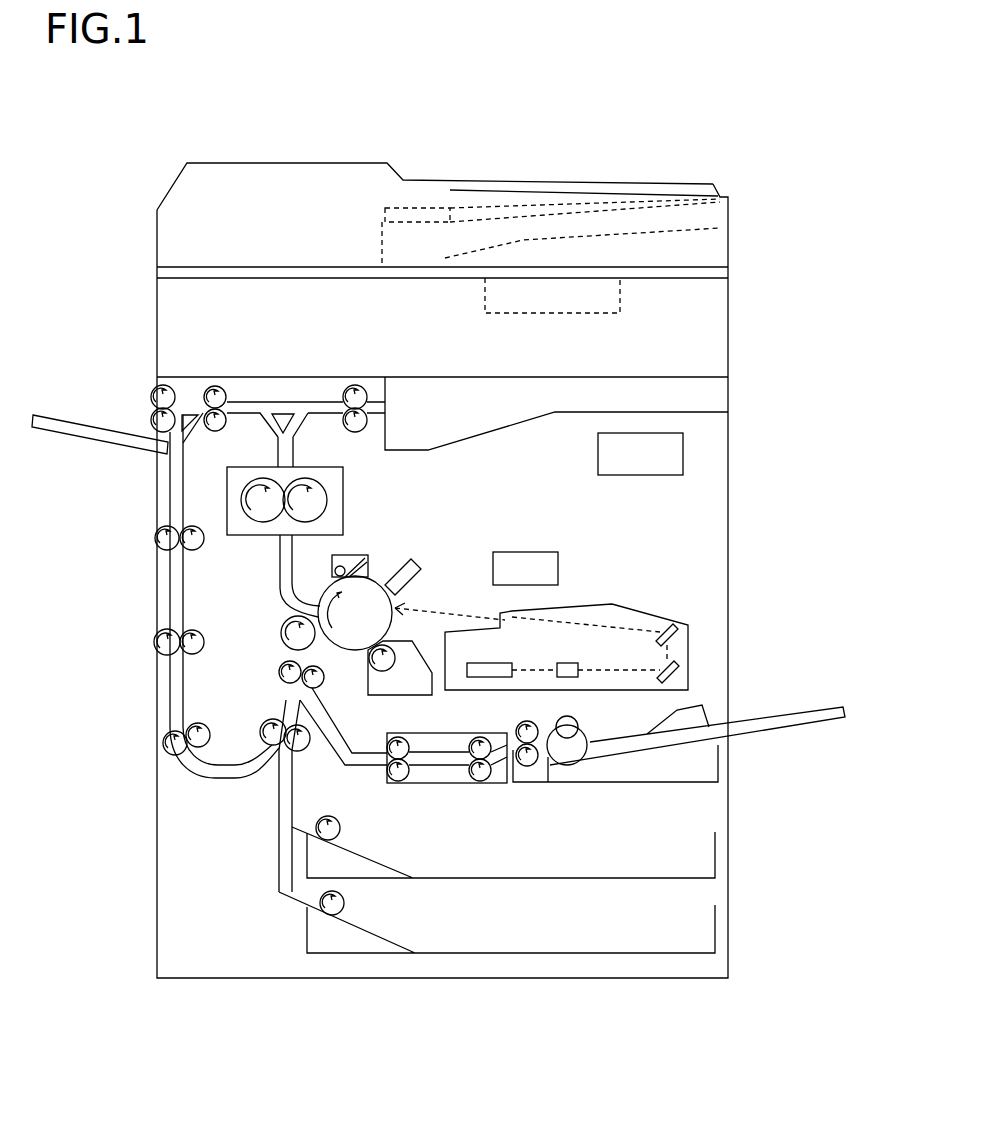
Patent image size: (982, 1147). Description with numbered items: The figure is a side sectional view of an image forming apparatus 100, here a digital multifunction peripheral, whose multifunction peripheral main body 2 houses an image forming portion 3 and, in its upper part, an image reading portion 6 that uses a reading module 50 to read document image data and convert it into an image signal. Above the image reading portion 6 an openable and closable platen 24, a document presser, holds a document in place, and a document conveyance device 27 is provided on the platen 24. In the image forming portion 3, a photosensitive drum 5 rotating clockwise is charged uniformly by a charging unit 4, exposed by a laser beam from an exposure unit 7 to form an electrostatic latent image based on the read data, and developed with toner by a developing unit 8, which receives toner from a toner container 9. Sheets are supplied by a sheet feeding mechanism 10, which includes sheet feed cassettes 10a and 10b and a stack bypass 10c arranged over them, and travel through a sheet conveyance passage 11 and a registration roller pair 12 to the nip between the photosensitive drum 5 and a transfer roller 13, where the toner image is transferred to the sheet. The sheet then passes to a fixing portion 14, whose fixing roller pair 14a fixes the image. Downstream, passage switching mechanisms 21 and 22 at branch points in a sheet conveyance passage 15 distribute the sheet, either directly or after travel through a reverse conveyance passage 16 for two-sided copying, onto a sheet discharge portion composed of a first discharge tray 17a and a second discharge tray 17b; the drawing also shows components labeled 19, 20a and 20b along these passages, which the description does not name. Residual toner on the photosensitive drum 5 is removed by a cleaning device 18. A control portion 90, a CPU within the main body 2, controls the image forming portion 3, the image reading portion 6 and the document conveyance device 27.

The image forming apparatus 100 is at (656, 153).
The multifunction peripheral main body 2 is at (728, 515).
The image forming portion 3 is at (417, 535).
The charging unit 4 is at (413, 577).
The photosensitive drum 5 is at (345, 640).
The image reading portion 6 is at (170, 333).
The exposure unit 7 is at (593, 617).
The developing unit 8 is at (400, 683).
The toner container 9 is at (528, 560).
The sheet feeding mechanism 10 is at (758, 806).
The sheet feed cassette 10a is at (700, 860).
The sheet feed cassette 10b is at (705, 935).
The stack bypass (manual feed tray) 10c is at (753, 712).
The sheet conveyance passage 11 is at (282, 777).
The registration roller pair 12 is at (285, 688).
The transfer roller 13 is at (283, 638).
The fixing portion 14 is at (223, 497).
The fixing roller pair 14a is at (325, 500).
The sheet conveyance passage 15 is at (275, 448).
The reverse conveyance passage 16 is at (175, 580).
The first discharge tray 17a is at (556, 413).
The second discharge tray 17b is at (78, 418).
The cleaning device 18 is at (352, 555).
The discharge rollers 19 is at (218, 387).
The discharge rollers 20a is at (377, 390).
The discharge rollers 20b is at (150, 407).
The passage switching mechanism 21 is at (287, 392).
The passage switching mechanism 22 is at (176, 424).
The platen (document presser) 24 is at (728, 270).
The document conveyance device 27 is at (195, 193).
The reading module 50 is at (548, 313).
The control portion (CPU) 90 is at (683, 452).